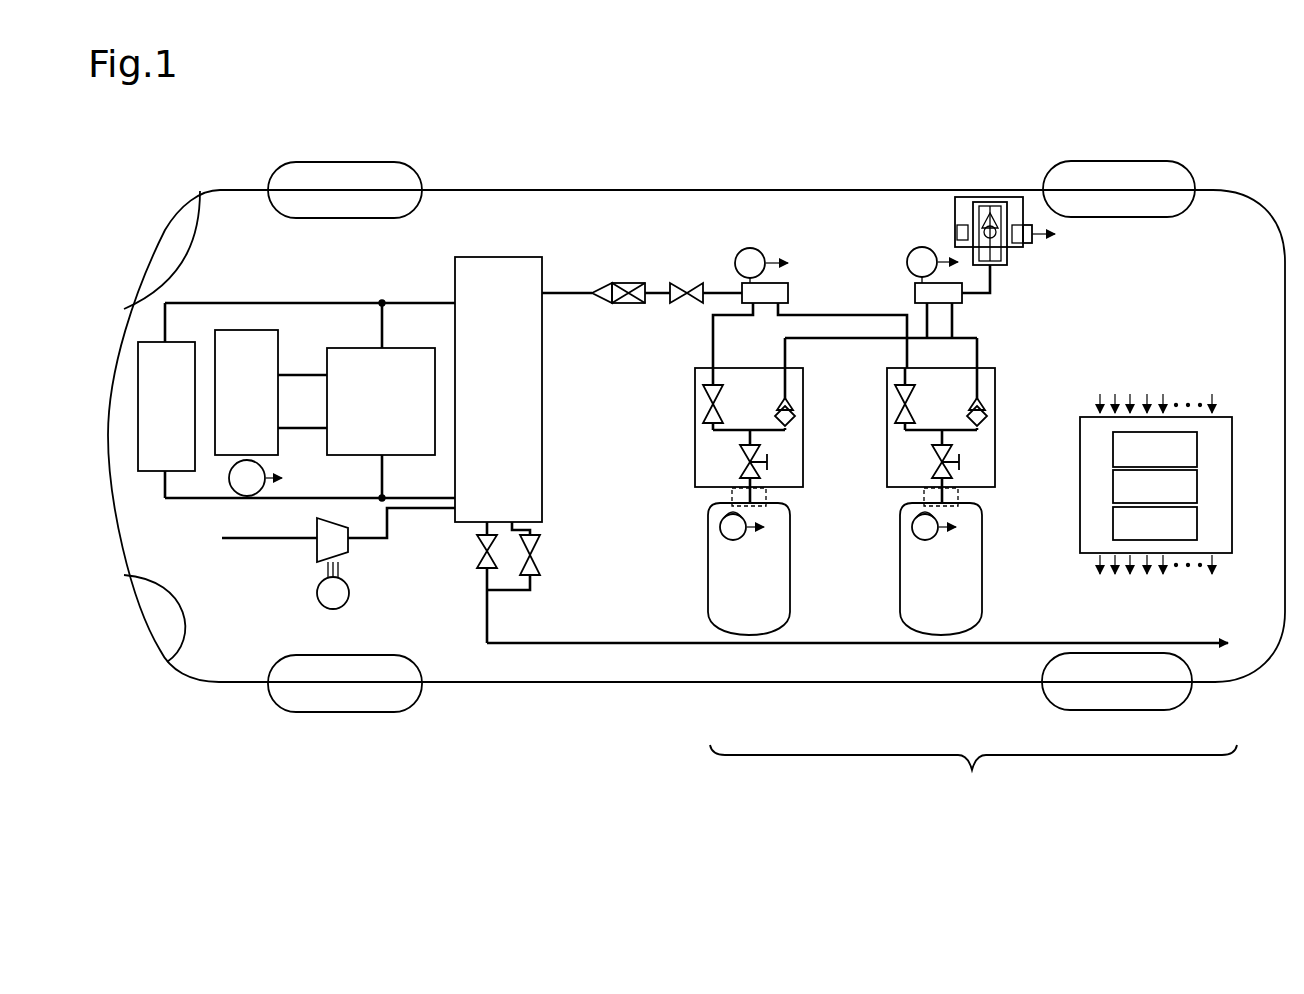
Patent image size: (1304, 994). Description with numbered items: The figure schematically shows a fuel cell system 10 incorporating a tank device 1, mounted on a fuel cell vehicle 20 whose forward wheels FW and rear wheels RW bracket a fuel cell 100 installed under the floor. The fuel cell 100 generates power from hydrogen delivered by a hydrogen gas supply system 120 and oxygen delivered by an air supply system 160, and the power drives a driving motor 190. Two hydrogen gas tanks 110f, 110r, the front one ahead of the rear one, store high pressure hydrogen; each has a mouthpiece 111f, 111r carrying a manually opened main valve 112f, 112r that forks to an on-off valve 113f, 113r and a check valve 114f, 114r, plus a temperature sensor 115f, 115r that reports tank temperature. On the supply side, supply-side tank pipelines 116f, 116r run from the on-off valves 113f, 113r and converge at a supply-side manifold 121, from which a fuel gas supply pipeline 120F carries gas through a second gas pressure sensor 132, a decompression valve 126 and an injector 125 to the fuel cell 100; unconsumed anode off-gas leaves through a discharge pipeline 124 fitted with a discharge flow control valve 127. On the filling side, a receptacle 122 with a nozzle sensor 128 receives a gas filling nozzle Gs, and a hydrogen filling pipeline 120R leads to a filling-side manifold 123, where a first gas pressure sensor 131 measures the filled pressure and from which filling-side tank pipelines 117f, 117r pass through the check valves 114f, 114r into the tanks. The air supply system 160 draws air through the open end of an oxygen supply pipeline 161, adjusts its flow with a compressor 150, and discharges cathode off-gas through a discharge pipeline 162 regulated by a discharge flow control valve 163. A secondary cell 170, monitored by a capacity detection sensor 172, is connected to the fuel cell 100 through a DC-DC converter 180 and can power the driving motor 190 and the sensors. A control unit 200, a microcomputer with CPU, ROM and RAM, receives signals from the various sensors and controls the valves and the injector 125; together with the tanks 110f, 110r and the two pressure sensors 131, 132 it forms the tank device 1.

The tank device 1 is at (973, 775).
The fuel cell system 10 is at (1140, 290).
The fuel cell vehicle 20 is at (603, 190).
The fuel cell 100 is at (495, 257).
The hydrogen gas tank 110f is at (710, 570).
The hydrogen gas tank 110r is at (902, 575).
The mouthpiece 111f is at (700, 490).
The mouthpiece 111r is at (893, 490).
The main valve 112f is at (740, 468).
The main valve 112r is at (932, 468).
The on-off valve 113f is at (703, 405).
The on-off valve 113r is at (892, 420).
The check valve 114f is at (796, 395).
The check valve 114r is at (985, 420).
The temperature sensor 115f is at (722, 522).
The temperature sensor 115r is at (914, 530).
The supply-side tank pipeline 116f is at (712, 352).
The supply-side tank pipeline 116r is at (897, 366).
The filling-side tank pipeline 117f is at (815, 336).
The filling-side tank pipeline 117r is at (980, 342).
The hydrogen gas supply system 120 is at (792, 205).
The fuel gas supply pipeline 120F is at (570, 295).
The hydrogen filling pipeline 120R is at (962, 262).
The supply-side manifold 121 is at (790, 288).
The receptacle 122 is at (1007, 258).
The filling-side manifold 123 is at (913, 290).
The discharge pipeline 124 is at (540, 530).
The injector 125 is at (626, 283).
The decompression valve 126 is at (688, 283).
The discharge flow control valve 127 is at (540, 565).
The nozzle sensor 128 is at (1040, 215).
The first gas pressure sensor 131 is at (918, 248).
The second gas pressure sensor 132 is at (750, 248).
The compressor 150 is at (315, 553).
The air supply system 160 is at (296, 575).
The oxygen supply pipeline 161 is at (222, 540).
The discharge pipeline 162 is at (543, 645).
The discharge flow control valve 163 is at (477, 560).
The secondary cell 170 is at (243, 330).
The capacity detection sensor 172 is at (284, 478).
The DC-DC converter 180 is at (356, 348).
The driving motor 190 is at (151, 342).
The control unit 200 is at (1232, 437).
The forward wheels FW is at (393, 163).
The rear wheels RW is at (1165, 163).
The gas filling nozzle Gs is at (1030, 200).